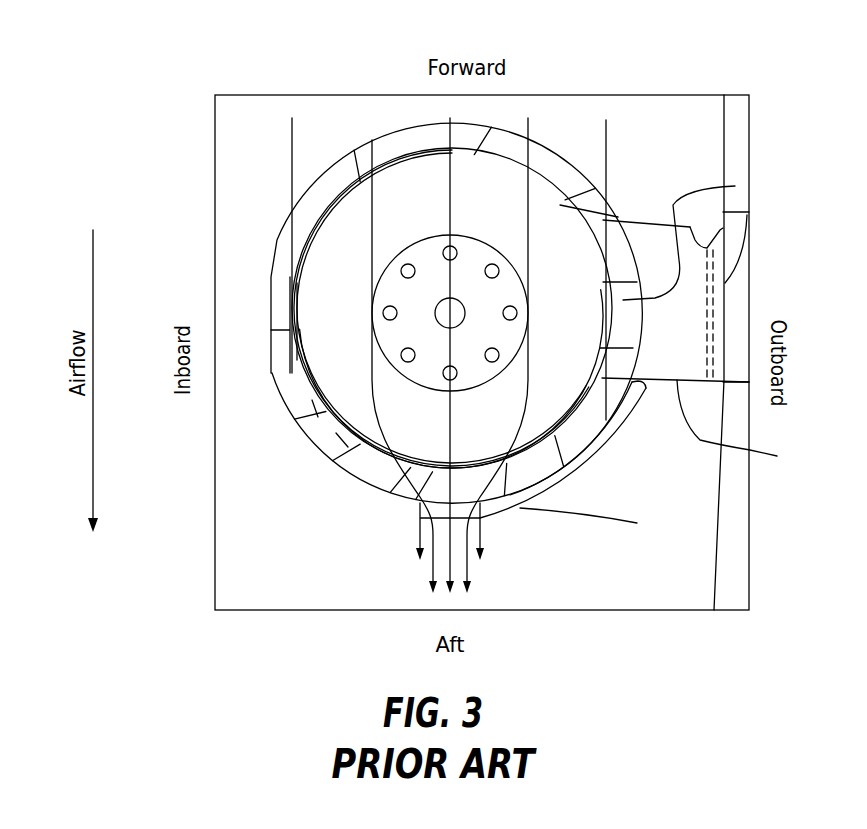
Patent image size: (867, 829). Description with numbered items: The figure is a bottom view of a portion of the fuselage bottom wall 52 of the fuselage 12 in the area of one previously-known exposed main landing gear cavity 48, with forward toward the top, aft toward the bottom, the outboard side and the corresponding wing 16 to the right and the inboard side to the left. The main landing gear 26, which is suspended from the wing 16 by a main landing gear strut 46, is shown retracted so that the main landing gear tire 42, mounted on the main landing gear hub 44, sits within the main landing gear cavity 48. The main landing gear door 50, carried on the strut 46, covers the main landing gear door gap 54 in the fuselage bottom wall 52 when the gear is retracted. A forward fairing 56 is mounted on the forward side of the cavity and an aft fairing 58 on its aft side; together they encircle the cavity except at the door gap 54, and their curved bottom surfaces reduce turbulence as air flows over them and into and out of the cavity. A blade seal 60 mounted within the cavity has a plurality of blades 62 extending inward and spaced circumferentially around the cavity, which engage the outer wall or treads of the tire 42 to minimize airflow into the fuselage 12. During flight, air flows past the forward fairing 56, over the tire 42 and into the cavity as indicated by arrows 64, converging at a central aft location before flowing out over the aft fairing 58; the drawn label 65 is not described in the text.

The fuselage 12 is at (245, 585).
The fuselage bottom wall 52 is at (439, 377).
The wing 16 is at (735, 135).
The main landing gear cavity 48 is at (278, 216).
The forward fairing 56 is at (360, 163).
The main landing gear 26 is at (280, 271).
The main landing gear tire 42 is at (330, 365).
The main landing gear hub 44 is at (393, 300).
The aft fairing 58 is at (330, 462).
The arrows 64 is at (450, 120).
The air passage 65 is at (570, 197).
The main landing gear strut 46 is at (735, 186).
The main landing gear door gap 54 is at (710, 248).
The main landing gear door 50 is at (703, 422).
The blade seal 60 is at (583, 447).
The blades 62 is at (525, 462).